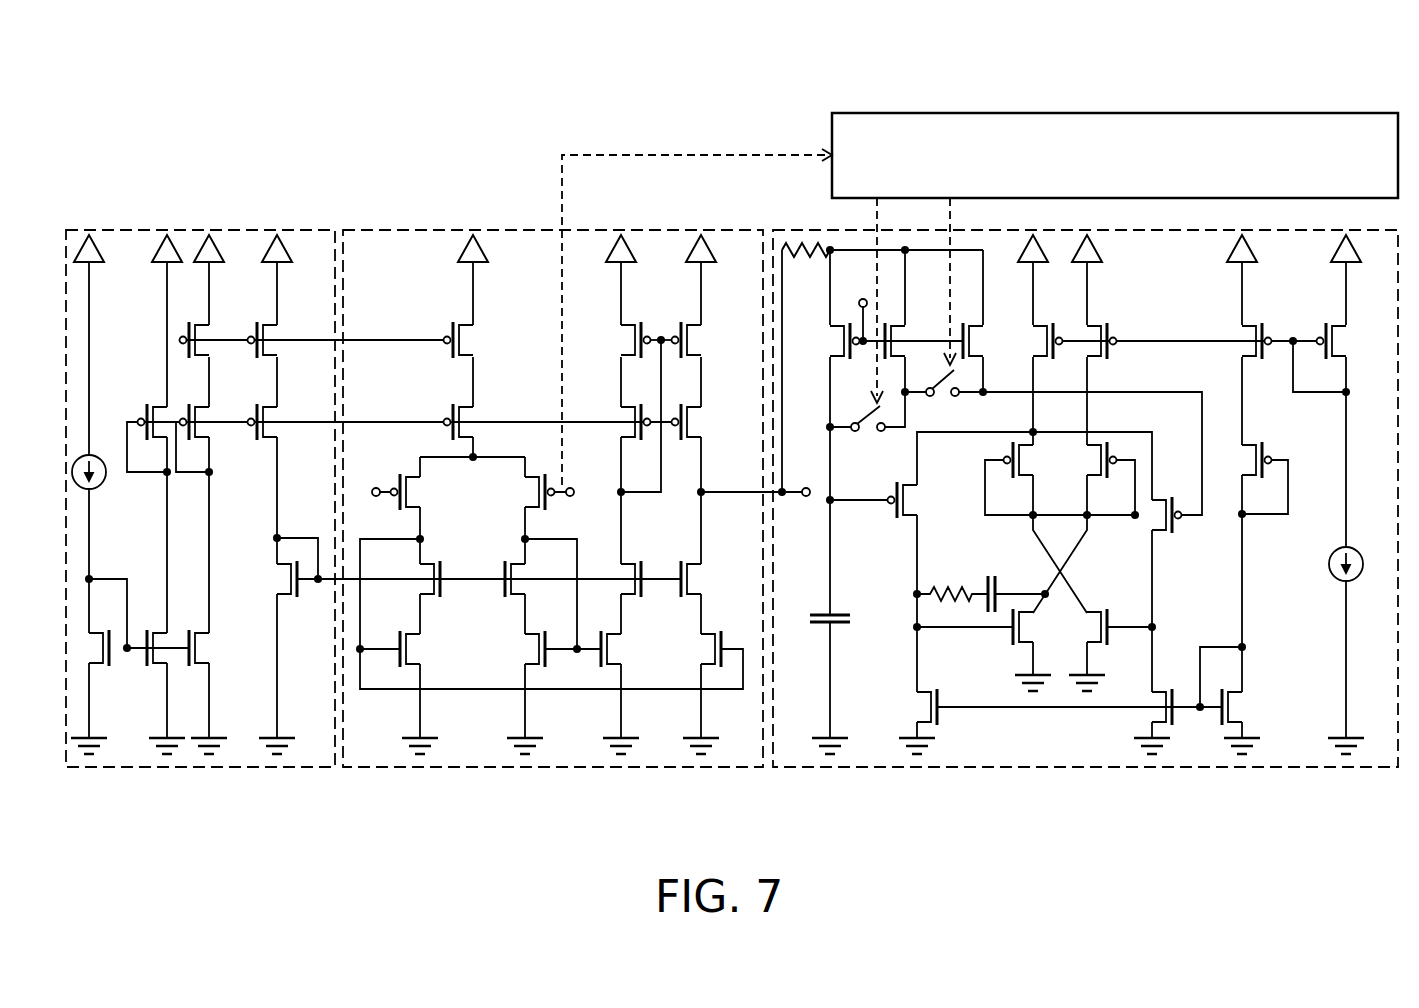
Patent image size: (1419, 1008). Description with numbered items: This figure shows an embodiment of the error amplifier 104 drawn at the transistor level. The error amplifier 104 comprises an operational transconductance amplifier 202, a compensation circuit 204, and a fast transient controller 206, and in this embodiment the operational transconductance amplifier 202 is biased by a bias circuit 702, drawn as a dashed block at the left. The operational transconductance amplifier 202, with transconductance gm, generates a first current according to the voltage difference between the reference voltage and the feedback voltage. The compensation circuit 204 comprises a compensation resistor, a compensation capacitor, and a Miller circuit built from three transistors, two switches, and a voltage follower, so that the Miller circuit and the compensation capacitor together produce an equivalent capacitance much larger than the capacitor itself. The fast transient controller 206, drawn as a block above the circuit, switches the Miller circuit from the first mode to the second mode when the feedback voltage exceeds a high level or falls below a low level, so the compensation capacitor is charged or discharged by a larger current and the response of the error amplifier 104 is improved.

The error amplifier 104 is at (126, 66).
The fast transient controller 206 is at (1117, 113).
The bias circuit 702 is at (111, 770).
The operational transconductance amplifier 202 is at (553, 770).
The compensation circuit 204 is at (1086, 770).